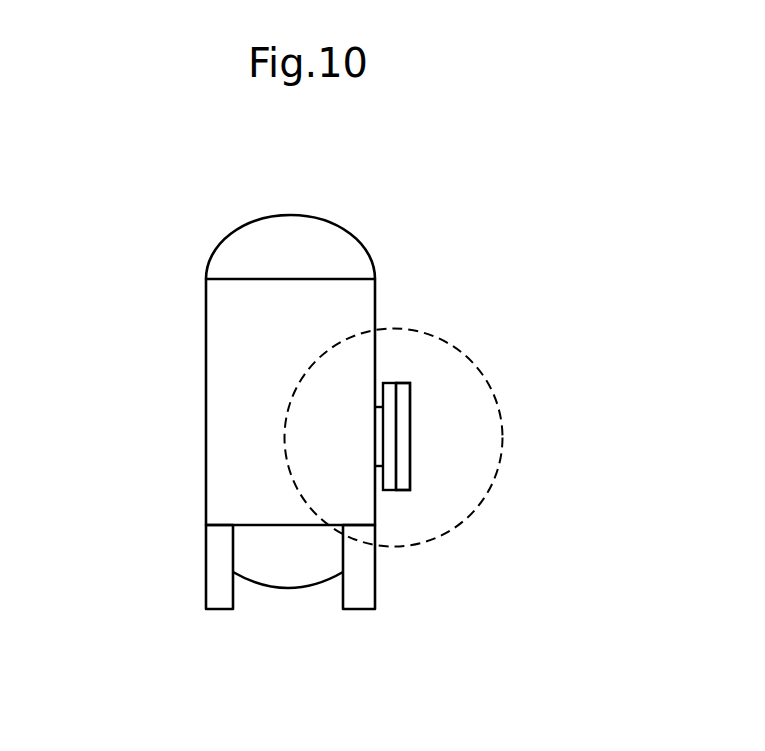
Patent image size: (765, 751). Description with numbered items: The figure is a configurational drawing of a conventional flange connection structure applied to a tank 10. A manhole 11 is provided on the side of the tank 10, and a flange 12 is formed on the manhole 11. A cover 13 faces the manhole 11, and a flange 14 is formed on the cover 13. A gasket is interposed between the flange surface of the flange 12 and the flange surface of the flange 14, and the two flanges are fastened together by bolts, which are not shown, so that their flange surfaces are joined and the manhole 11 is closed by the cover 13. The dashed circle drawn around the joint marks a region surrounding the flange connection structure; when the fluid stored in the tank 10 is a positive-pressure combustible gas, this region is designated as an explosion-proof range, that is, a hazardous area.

The tank 10 is at (223, 438).
The manhole 11 is at (378, 420).
The flange 12 is at (390, 390).
The cover 13 is at (403, 437).
The flange 14 is at (405, 393).